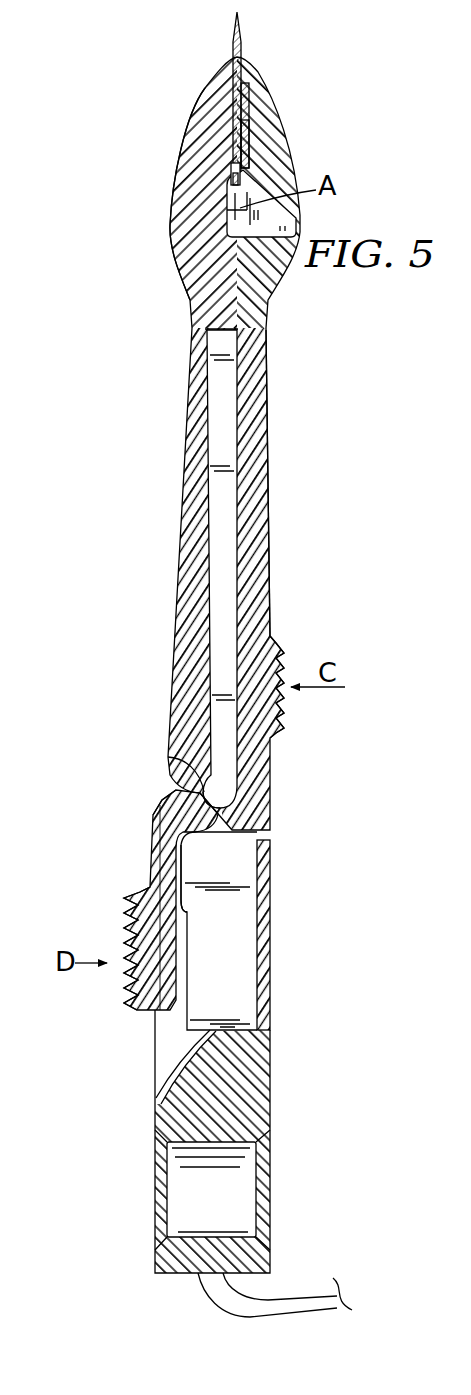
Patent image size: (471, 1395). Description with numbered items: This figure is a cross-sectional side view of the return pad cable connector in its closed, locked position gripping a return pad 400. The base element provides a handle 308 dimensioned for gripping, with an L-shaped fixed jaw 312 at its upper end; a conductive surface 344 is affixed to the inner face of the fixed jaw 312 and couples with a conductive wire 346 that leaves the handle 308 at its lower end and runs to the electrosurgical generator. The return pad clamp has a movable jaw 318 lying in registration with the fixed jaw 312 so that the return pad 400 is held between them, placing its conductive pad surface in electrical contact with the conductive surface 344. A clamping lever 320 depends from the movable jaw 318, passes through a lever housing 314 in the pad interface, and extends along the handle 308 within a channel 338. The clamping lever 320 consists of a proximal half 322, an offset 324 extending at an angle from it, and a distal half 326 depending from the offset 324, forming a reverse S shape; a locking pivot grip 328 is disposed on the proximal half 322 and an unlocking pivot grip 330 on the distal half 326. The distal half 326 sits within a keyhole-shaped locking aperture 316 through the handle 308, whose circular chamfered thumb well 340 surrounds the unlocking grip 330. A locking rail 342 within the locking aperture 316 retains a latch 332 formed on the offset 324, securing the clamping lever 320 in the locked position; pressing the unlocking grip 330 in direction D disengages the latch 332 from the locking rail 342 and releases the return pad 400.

The handle 308 is at (145, 1160).
The fixed jaw 312 is at (255, 104).
The lever housing 314 is at (190, 328).
The locking aperture 316 is at (216, 978).
The movable jaw 318 is at (197, 180).
The clamping lever 320 is at (253, 372).
The proximal half 322 is at (243, 493).
The offset 324 is at (200, 768).
The distal half 326 is at (150, 860).
The locking pivot grip 328 is at (282, 656).
The unlocking pivot grip 330 is at (133, 912).
The latch 332 is at (167, 802).
The channel 338 is at (220, 547).
The thumb well 340 is at (170, 1030).
The locking rail 342 is at (195, 776).
The conductive surface 344 is at (245, 134).
The conductive wire 346 is at (300, 1292).
The return pad 400 is at (233, 43).